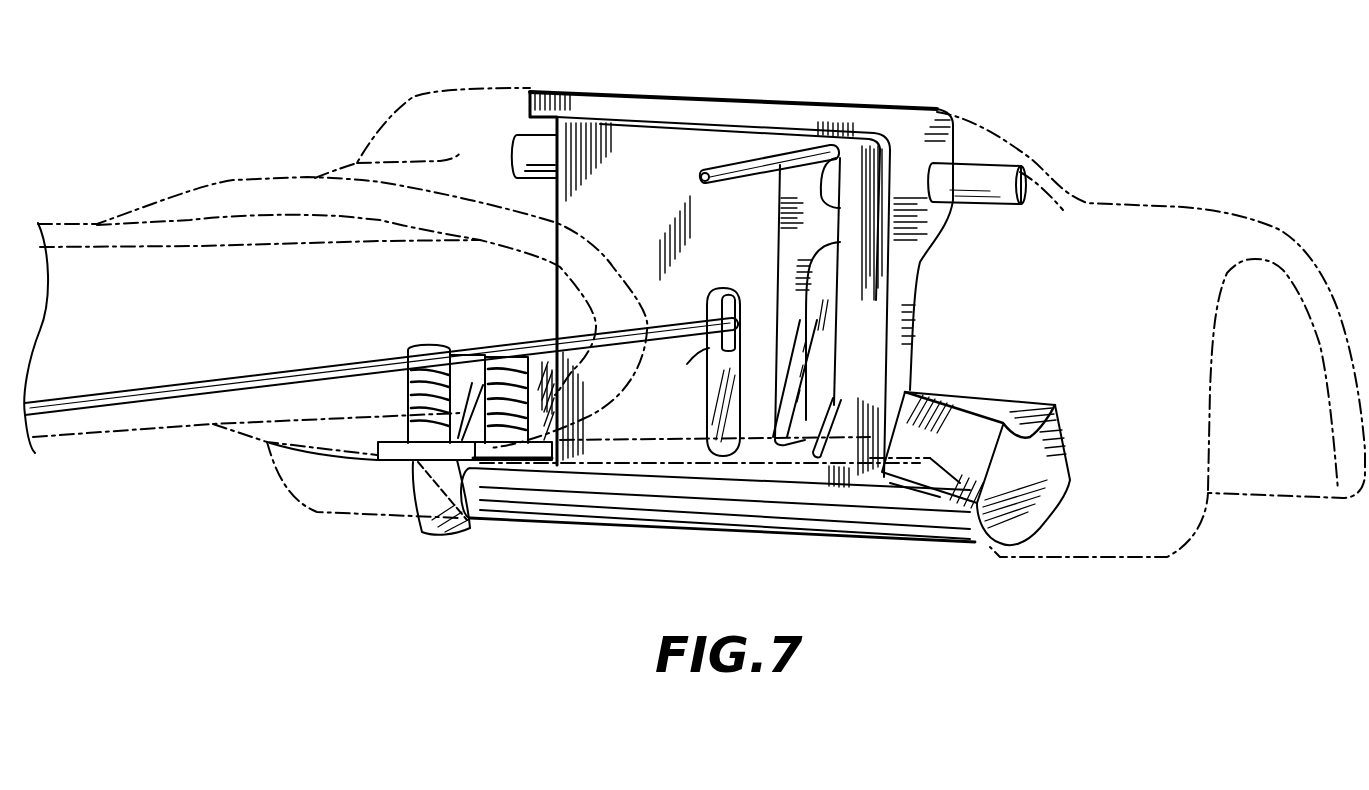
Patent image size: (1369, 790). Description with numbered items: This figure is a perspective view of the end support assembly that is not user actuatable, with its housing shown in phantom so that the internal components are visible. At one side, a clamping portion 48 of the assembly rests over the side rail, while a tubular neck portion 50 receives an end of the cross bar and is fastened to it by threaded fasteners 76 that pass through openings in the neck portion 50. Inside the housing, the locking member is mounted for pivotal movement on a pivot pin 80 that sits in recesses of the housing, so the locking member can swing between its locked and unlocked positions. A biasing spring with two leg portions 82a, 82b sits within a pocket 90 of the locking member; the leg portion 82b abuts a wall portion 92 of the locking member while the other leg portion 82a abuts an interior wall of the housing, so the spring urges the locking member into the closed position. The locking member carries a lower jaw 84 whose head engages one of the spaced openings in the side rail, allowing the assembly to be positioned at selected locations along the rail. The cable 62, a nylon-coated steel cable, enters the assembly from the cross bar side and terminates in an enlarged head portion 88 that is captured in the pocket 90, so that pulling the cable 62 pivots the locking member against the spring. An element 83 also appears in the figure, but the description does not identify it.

The clamping portion 48 is at (1183, 208).
The tubular neck portion 50 is at (233, 180).
The cable 62 is at (163, 403).
The threaded fasteners 76 is at (413, 535).
The pivot pin 80 is at (980, 172).
The leg portion 82a is at (737, 165).
The leg portion 82b is at (816, 456).
The latch plate 83 is at (778, 250).
The lower jaw 84 is at (1033, 513).
The enlarged head portion 88 is at (707, 348).
The pocket 90 is at (716, 380).
The wall portion 92 is at (800, 436).